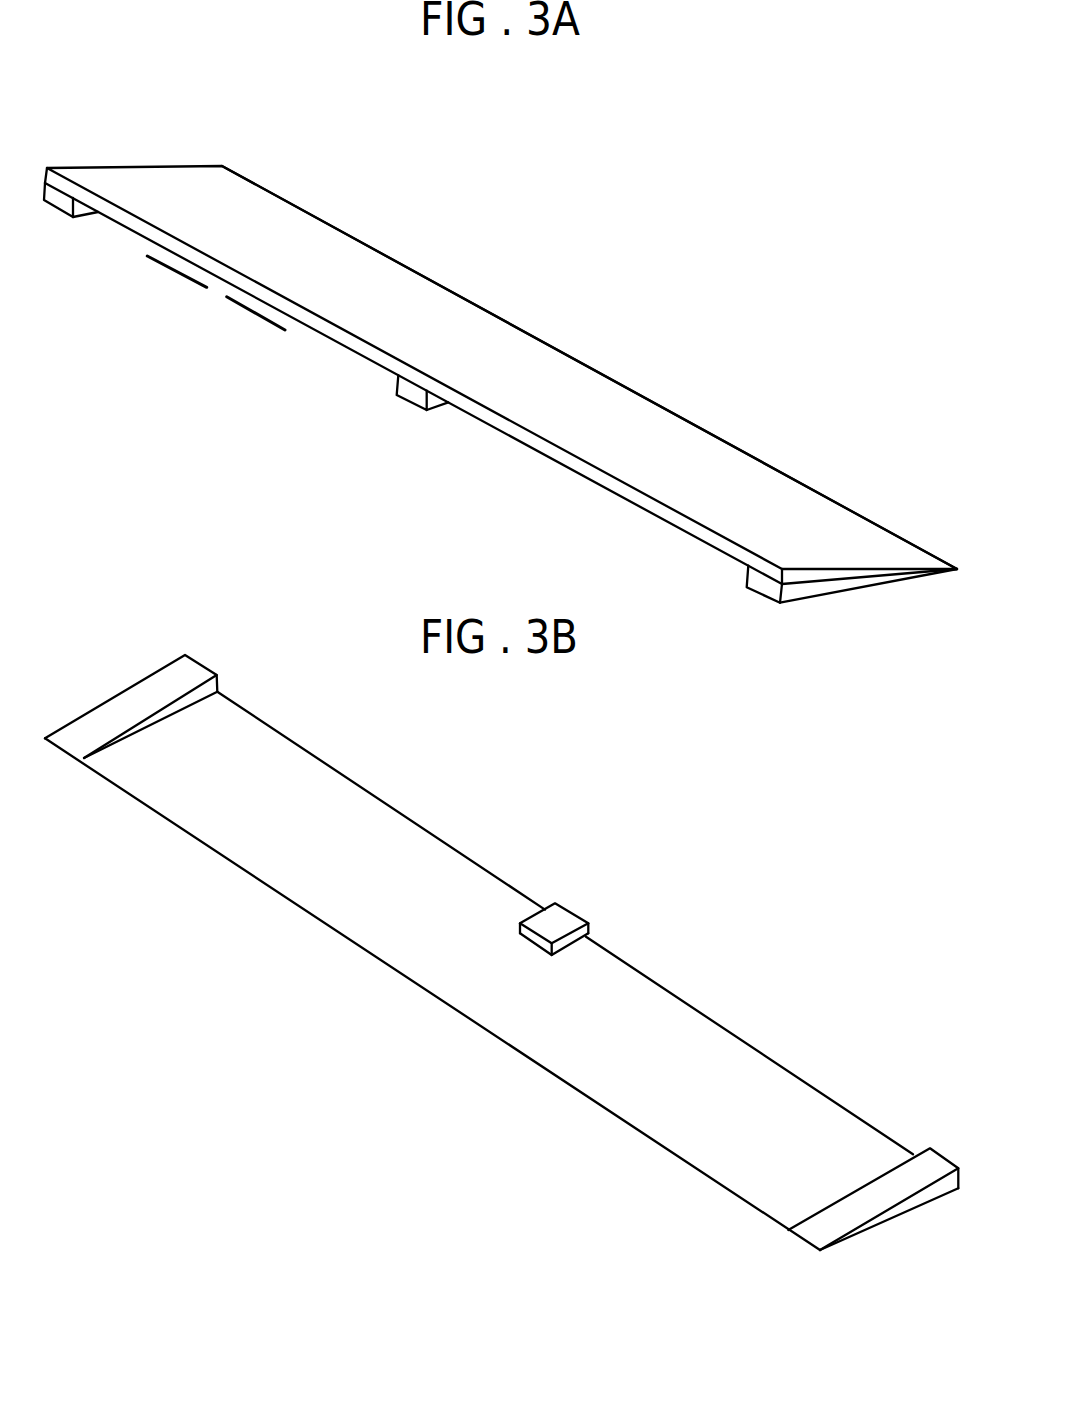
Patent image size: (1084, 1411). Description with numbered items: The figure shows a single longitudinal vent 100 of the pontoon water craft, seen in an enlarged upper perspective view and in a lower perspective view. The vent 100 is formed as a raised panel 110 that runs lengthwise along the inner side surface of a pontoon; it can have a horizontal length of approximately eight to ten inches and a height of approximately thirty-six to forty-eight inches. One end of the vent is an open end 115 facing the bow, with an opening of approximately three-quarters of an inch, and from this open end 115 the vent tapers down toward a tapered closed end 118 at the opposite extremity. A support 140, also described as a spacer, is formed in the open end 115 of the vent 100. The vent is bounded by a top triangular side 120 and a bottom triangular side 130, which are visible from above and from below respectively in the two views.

In FIG. 3A, the single longitudinal vent 100 is at (500, 399).
In FIG. 3B, the single longitudinal vent 100 is at (500, 904).
In FIG. 3A, the raised panel 110 is at (337, 253).
In FIG. 3B, the raised panel 110 is at (668, 1070).
In FIG. 3A, the open end 115 is at (217, 308).
In FIG. 3A, the tapered closed end 118 is at (608, 377).
In FIG. 3A, the top triangular side 120 is at (63, 205).
In FIG. 3B, the top triangular side 120 is at (87, 732).
In FIG. 3A, the bottom triangular side 130 is at (805, 589).
In FIG. 3B, the bottom triangular side 130 is at (923, 1162).
In FIG. 3A, the support 140 is at (413, 393).
In FIG. 3B, the support 140 is at (553, 922).